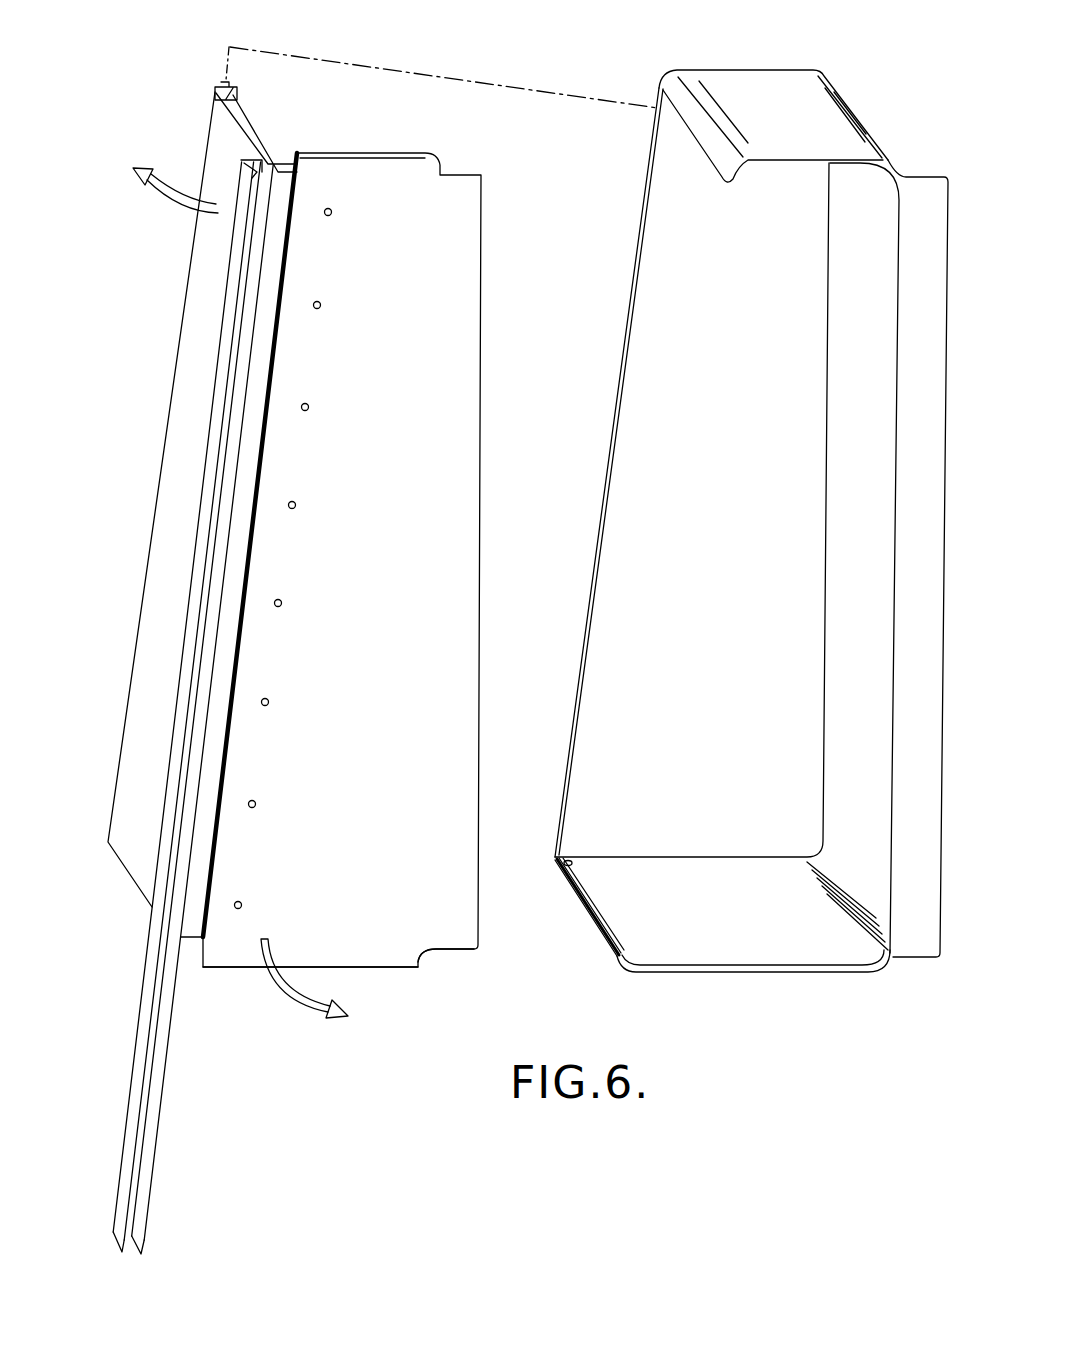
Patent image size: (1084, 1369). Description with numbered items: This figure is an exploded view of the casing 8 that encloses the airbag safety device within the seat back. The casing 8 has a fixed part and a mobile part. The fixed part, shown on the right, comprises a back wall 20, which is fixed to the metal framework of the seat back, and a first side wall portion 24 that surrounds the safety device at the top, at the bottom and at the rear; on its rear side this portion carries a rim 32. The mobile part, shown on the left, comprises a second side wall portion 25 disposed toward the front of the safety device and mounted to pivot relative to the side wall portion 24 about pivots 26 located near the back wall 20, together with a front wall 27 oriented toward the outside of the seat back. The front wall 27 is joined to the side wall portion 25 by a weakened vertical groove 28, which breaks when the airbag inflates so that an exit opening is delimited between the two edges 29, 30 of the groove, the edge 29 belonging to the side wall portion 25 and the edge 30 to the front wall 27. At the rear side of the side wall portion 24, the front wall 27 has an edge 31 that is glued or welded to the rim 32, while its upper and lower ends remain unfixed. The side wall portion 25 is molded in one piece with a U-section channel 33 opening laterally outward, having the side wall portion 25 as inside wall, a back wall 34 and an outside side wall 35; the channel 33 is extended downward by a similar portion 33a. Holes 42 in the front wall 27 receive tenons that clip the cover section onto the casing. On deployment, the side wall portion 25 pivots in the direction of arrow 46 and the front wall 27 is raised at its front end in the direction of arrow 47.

The casing 8 is at (870, 113).
The back wall 20 is at (649, 381).
The first side wall portion 24 is at (757, 948).
The second side wall portion 25 is at (188, 341).
The pivots 26 is at (218, 85).
The front wall 27 is at (368, 933).
The vertical groove 28 is at (253, 553).
The edge of groove 29 is at (253, 514).
The edge of groove 30 is at (245, 625).
The edge 31 is at (447, 940).
The rim 32 is at (915, 938).
The U-section channel 33 is at (185, 637).
The channel extension portion 33a is at (163, 1093).
The back wall of channel 34 is at (248, 162).
The outside side wall 35 is at (217, 420).
The holes 42 is at (255, 801).
The arrow 46 is at (160, 193).
The arrow 47 is at (290, 996).